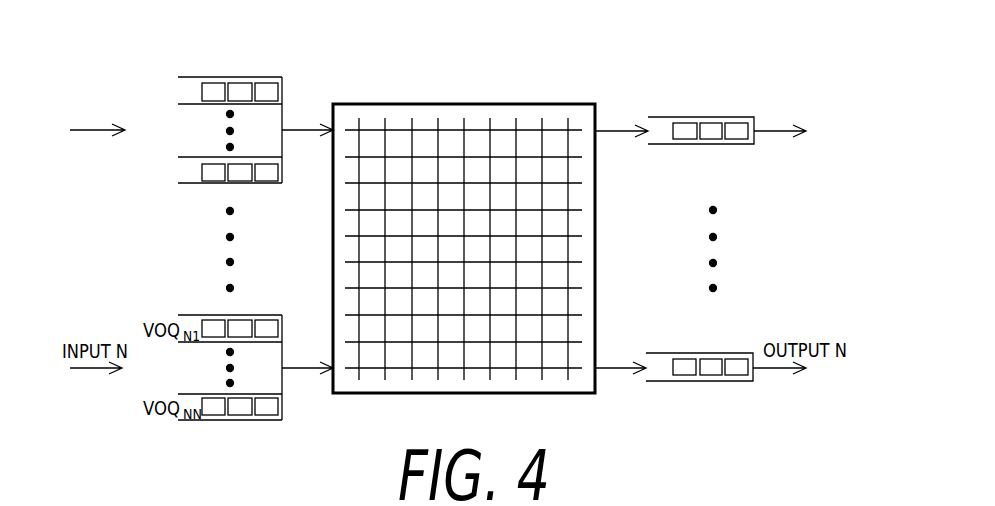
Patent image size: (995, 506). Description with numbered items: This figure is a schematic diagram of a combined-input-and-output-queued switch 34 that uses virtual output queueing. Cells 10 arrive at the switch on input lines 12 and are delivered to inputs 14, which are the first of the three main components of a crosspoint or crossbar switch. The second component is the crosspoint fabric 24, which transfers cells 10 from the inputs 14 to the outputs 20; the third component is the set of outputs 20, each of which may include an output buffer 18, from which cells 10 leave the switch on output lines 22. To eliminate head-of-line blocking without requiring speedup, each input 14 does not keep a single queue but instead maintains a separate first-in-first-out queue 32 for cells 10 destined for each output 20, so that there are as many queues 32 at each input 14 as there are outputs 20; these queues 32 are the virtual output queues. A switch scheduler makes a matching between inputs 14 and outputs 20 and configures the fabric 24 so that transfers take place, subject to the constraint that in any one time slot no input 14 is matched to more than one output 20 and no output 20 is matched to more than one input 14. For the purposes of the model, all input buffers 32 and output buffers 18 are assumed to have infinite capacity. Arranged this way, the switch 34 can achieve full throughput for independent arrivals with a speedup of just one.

The cell 10 is at (243, 170).
The input line 12 is at (100, 133).
The input 14 is at (203, 66).
The output buffer 18 is at (702, 145).
The output 20 is at (727, 105).
The output line 22 is at (780, 132).
The crosspoint fabric 24 is at (490, 393).
The virtual output queue 32 is at (285, 88).
The switch 34 is at (622, 78).